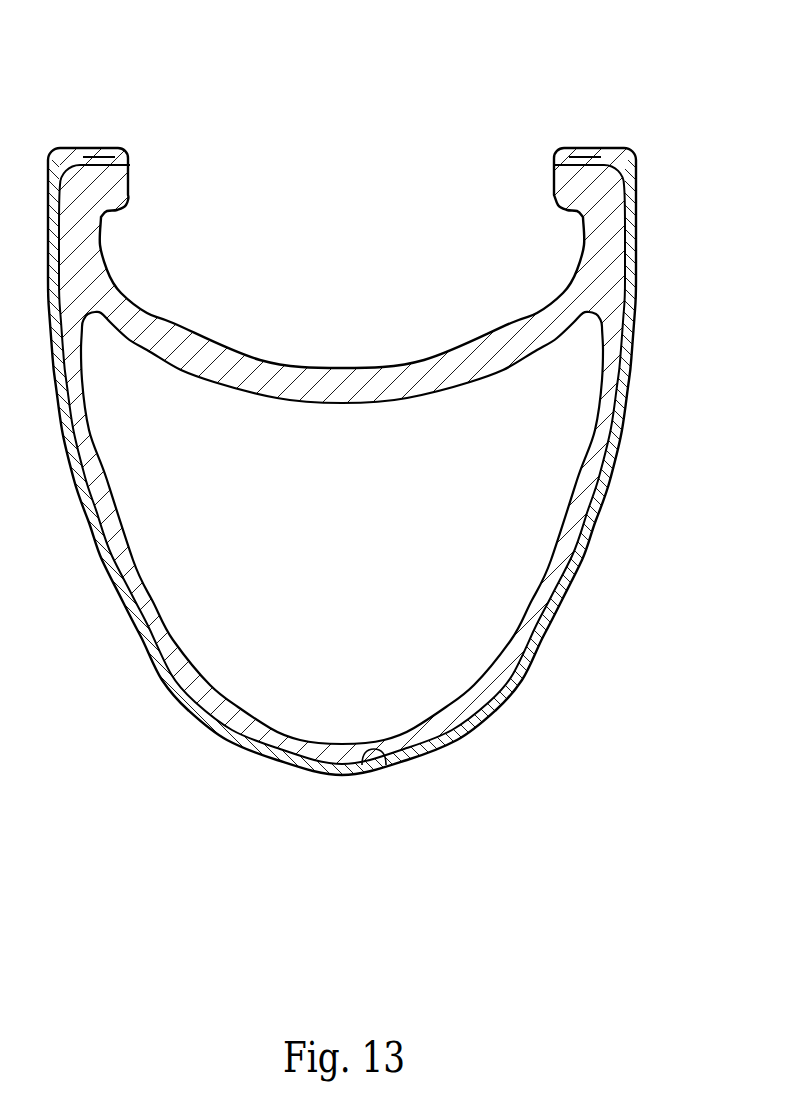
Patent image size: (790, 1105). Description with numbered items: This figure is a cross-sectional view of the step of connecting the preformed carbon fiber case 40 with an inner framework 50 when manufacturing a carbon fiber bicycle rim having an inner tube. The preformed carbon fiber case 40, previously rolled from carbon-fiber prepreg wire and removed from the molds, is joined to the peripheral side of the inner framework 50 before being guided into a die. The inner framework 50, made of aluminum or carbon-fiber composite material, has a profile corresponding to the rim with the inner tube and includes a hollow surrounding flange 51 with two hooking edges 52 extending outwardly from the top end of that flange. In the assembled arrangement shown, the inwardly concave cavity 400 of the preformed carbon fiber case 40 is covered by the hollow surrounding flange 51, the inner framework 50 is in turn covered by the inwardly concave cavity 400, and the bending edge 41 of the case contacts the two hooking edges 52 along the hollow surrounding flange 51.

The preformed carbon fiber case 40 is at (567, 605).
The bending edge 41 is at (92, 150).
The inner framework 50 is at (528, 672).
The hollow surrounding flange 51 is at (590, 495).
The hooking edges 52 is at (597, 200).
The inwardly concave cavity 400 is at (393, 765).